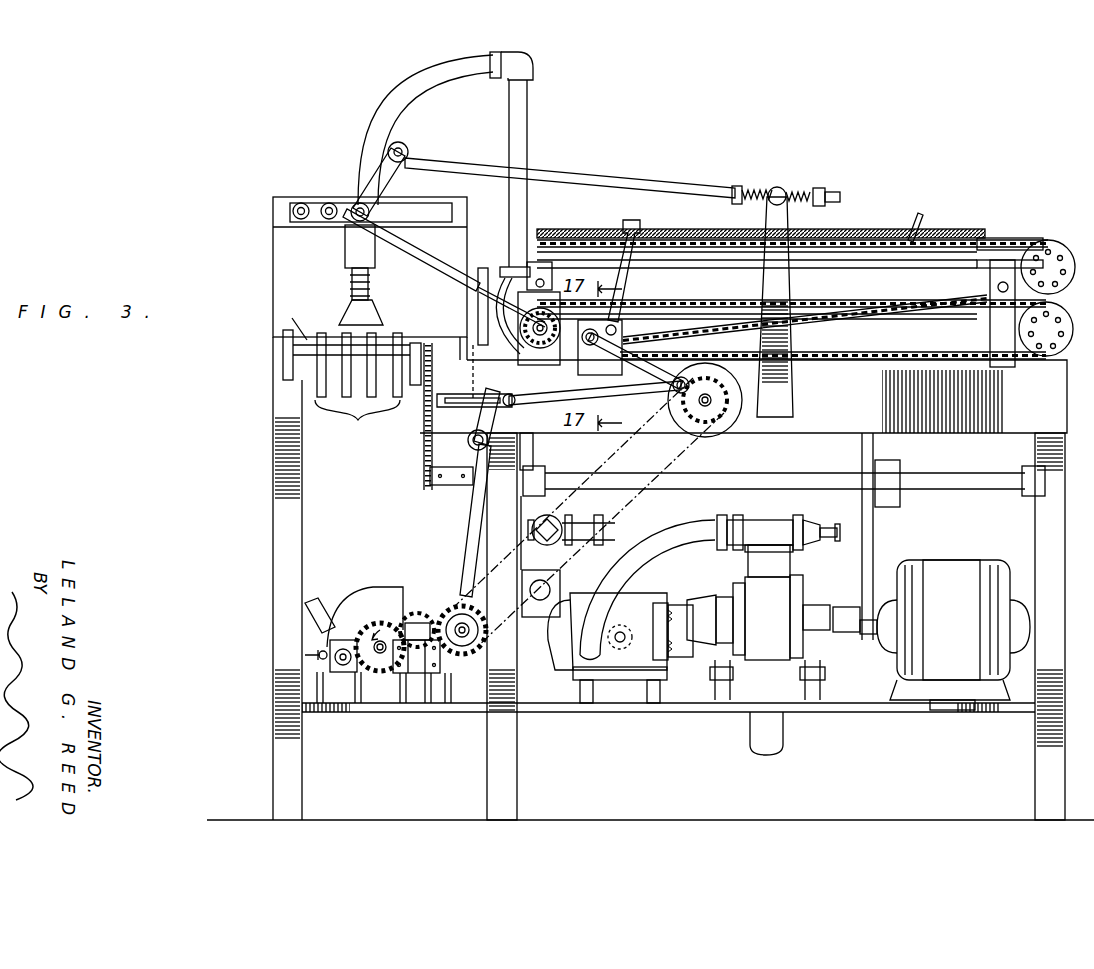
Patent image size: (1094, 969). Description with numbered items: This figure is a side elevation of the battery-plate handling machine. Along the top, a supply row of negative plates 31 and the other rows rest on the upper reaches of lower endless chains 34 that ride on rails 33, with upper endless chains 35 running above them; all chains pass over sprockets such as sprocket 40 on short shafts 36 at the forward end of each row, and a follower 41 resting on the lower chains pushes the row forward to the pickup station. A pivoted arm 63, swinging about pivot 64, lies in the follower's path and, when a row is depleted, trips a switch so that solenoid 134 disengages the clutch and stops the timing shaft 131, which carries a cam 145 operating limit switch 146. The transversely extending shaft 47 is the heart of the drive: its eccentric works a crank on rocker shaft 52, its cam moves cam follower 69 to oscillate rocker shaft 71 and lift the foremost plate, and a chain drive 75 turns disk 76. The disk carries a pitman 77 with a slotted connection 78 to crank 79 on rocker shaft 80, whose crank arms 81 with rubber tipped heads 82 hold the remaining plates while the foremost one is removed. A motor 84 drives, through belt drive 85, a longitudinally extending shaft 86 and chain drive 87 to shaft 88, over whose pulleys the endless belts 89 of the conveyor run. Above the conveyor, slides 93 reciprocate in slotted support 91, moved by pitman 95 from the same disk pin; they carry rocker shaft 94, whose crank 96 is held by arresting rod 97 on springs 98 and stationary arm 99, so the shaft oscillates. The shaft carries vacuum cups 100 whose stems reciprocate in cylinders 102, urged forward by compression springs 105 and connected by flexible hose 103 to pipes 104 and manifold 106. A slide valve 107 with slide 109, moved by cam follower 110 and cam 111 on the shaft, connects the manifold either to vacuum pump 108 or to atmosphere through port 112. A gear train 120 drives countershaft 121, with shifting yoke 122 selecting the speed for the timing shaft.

The row of negative plates 31 is at (862, 230).
The rails 33 is at (836, 361).
The lower endless chains 34 is at (818, 364).
The upper endless chains 35 is at (956, 232).
The short shafts 36 is at (540, 336).
The sprocket 40 is at (541, 262).
The followers 41 is at (910, 213).
The transversely extending shaft 47 is at (462, 640).
The rocker shaft 52 is at (541, 580).
The arm 63 is at (620, 296).
The pivot 64 is at (614, 328).
The cam follower 69 is at (475, 566).
The rocker shaft 71 is at (591, 345).
The chain drive 75 is at (686, 468).
The disk 76 is at (733, 425).
The pitman 77 is at (635, 396).
The slotted connection 78 is at (450, 403).
The crank 79 is at (500, 415).
The rocker shaft 80 is at (472, 448).
The crank arms 81 is at (462, 326).
The rubber tipped heads 82 is at (483, 268).
The motor 84 is at (965, 570).
The belt drive 85 is at (875, 544).
The longitudinally extending shaft 86 is at (981, 480).
The chain drive 87 is at (424, 478).
The shaft 88 is at (290, 370).
The endless belts 89 is at (357, 417).
The slotted support 91 is at (290, 202).
The slides 93 is at (313, 205).
The rocker shaft 94 is at (357, 204).
The pitman 95 is at (412, 254).
The crank 96 is at (405, 150).
The arresting rod 97 is at (652, 186).
The springs 98 is at (752, 192).
The stationary arm 99 is at (781, 190).
The vacuum cups 100 is at (350, 312).
The cylinder 102 is at (345, 246).
The flexible hose 103 is at (393, 86).
The pipes 104 is at (528, 128).
The compression springs 105 is at (368, 290).
The manifold 106 is at (575, 515).
The slide valve 107 is at (664, 594).
The vacuum pump 108 is at (773, 637).
The slide 109 is at (565, 705).
The cam follower 110 is at (545, 640).
The cam 111 is at (441, 605).
The port 112 is at (620, 650).
The gear train 120 is at (380, 620).
The countershaft 121 is at (380, 655).
The shifting yoke 122 is at (314, 603).
The timing shaft 131 is at (342, 668).
The solenoid 134 is at (430, 668).
The cam 145 is at (343, 648).
The limit switch 146 is at (318, 655).